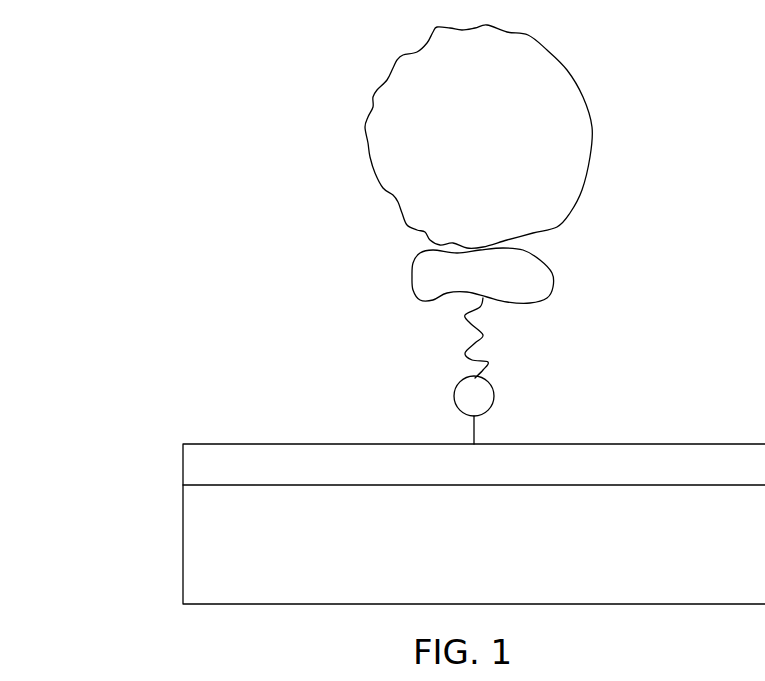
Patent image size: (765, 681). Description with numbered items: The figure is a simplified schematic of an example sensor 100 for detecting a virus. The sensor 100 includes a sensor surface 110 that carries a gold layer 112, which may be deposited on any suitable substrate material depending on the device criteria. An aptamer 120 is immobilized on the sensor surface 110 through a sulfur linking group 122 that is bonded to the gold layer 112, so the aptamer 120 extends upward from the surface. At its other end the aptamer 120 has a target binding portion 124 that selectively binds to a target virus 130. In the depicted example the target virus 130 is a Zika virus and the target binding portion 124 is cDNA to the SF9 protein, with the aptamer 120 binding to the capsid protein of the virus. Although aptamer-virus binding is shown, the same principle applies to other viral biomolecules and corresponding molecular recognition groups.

The sensor 100 is at (138, 58).
The sensor surface 110 is at (277, 430).
The gold layer 112 is at (668, 453).
The aptamer 120 is at (483, 335).
The sulfur linking group 122 is at (462, 396).
The target binding portion 124 is at (553, 271).
The target virus 130 is at (583, 137).